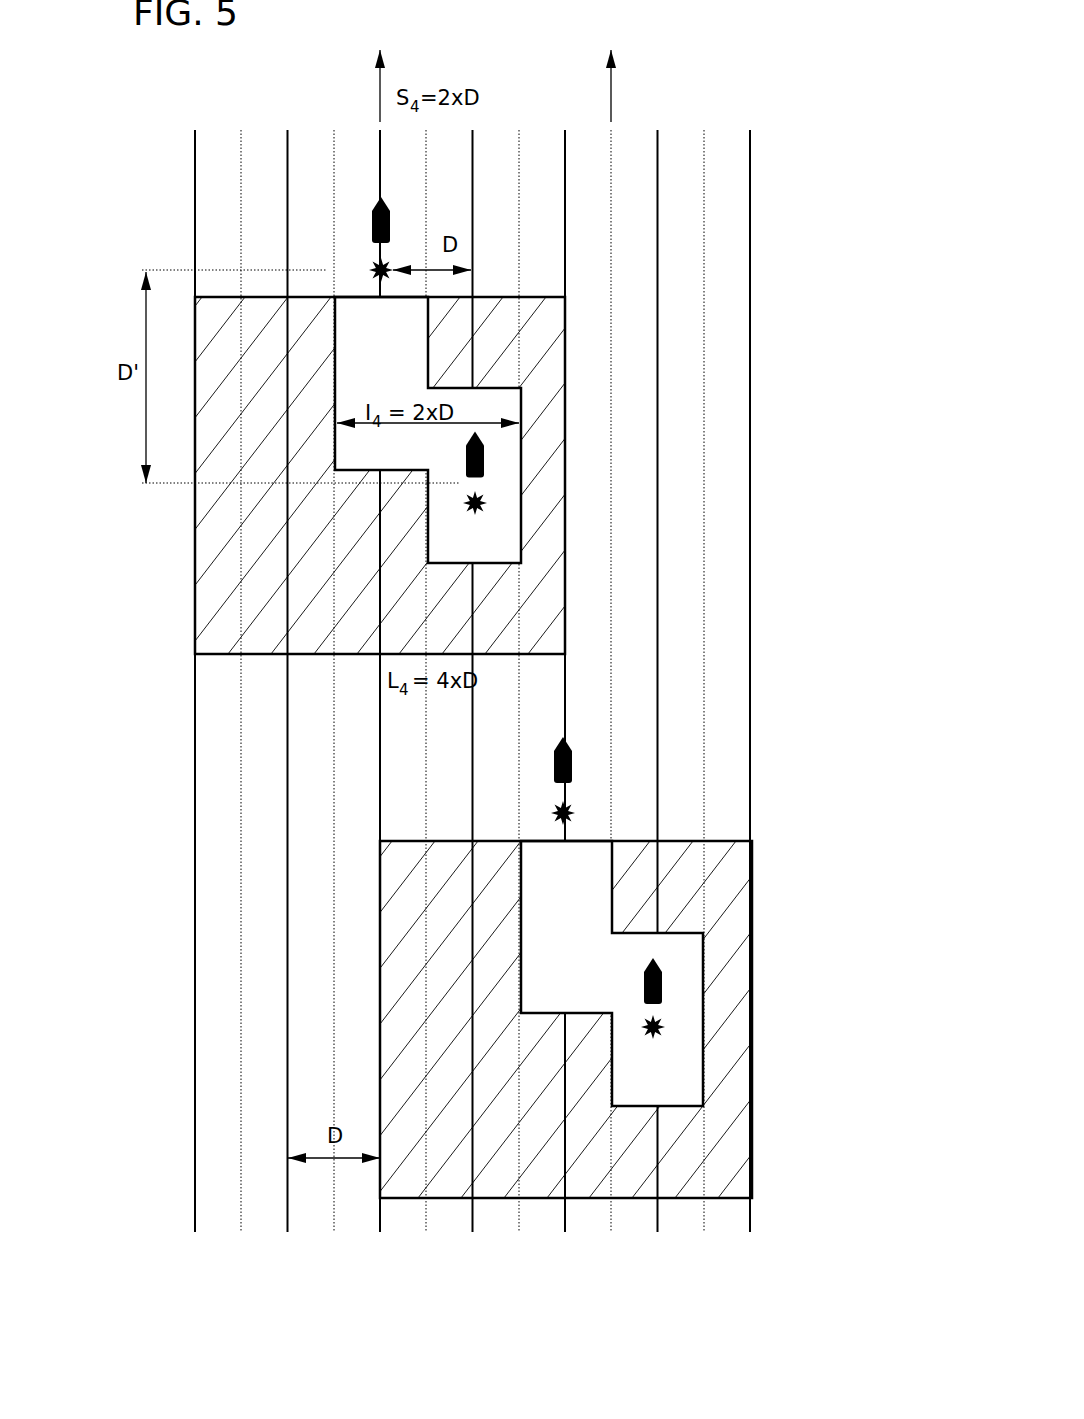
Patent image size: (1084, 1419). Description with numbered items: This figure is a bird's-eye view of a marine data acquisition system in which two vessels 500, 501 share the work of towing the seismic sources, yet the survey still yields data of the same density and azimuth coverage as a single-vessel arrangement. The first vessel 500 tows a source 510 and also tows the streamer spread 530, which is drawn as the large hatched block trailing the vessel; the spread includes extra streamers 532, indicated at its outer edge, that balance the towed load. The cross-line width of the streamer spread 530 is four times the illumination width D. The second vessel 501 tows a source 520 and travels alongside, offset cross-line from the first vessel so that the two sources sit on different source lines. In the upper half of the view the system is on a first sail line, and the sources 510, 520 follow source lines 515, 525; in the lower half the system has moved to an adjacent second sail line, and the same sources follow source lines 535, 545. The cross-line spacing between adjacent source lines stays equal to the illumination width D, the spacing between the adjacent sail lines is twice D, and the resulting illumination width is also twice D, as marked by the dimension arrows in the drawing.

The vessel 500 is at (389, 204).
The source 510 is at (376, 265).
The vessel 501 is at (487, 447).
The source 520 is at (487, 498).
The streamer spread 530 is at (262, 630).
The extra streamers 532 is at (282, 257).
The source line 515 is at (380, 1221).
The source line 525 is at (472, 1221).
The source line 535 is at (565, 1221).
The source line 545 is at (657, 1221).